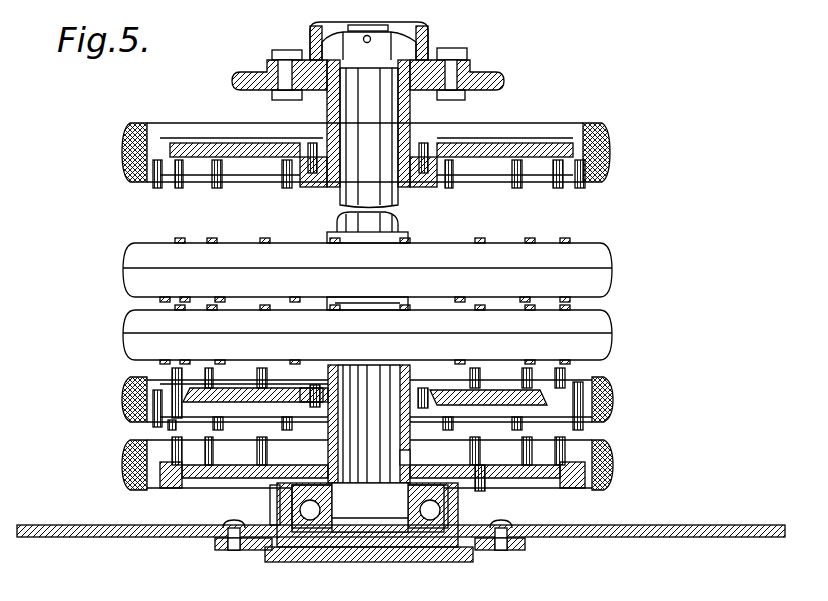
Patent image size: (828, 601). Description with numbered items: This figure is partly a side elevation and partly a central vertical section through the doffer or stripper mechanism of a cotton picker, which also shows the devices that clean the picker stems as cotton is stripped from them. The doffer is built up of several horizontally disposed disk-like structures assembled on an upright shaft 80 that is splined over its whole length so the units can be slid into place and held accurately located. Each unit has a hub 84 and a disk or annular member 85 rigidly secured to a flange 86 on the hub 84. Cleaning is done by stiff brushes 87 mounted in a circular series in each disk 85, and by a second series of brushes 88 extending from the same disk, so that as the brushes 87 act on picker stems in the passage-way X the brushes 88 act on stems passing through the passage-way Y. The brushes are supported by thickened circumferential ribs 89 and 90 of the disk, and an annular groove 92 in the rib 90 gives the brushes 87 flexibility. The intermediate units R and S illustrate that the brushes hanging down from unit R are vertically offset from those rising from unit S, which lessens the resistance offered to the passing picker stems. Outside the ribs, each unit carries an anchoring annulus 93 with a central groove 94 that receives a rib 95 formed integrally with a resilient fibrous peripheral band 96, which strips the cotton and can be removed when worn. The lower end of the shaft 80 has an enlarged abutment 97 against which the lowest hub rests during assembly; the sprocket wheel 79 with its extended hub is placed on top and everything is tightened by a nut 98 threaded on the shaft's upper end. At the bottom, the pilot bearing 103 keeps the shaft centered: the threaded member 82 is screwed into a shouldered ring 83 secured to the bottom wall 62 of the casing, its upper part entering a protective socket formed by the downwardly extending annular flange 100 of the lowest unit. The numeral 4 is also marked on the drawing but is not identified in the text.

The clutch disk R 4 is at (344, 266).
The bottom wall 62 is at (619, 540).
The sprocket wheel 79 is at (470, 70).
The shaft 80 is at (385, 110).
The pilot bearing 82 is at (336, 539).
The screw threaded and shouldered ring 83 is at (225, 548).
The hub 84 is at (410, 365).
The disk 85 is at (575, 448).
The flange 86 is at (424, 170).
The brushes 87 is at (173, 372).
The brushes 88 is at (170, 425).
The circumferential rib 89 is at (180, 450).
The circumferential rib 90 is at (150, 384).
The annular groove 92 is at (200, 392).
The anchoring annulus 93 is at (140, 493).
The central groove 94 is at (158, 426).
The rib 95 is at (612, 460).
The peripheral band 96 is at (610, 395).
The abutment 97 is at (290, 500).
The nut 98 is at (322, 40).
The annular flange 100 is at (465, 500).
The pilot bearing 103 is at (340, 540).
The intermediate disk-like structure R is at (379, 270).
The intermediate disk-like structure S is at (380, 334).
The passage-way X is at (367, 396).
The passage-way Y is at (367, 468).